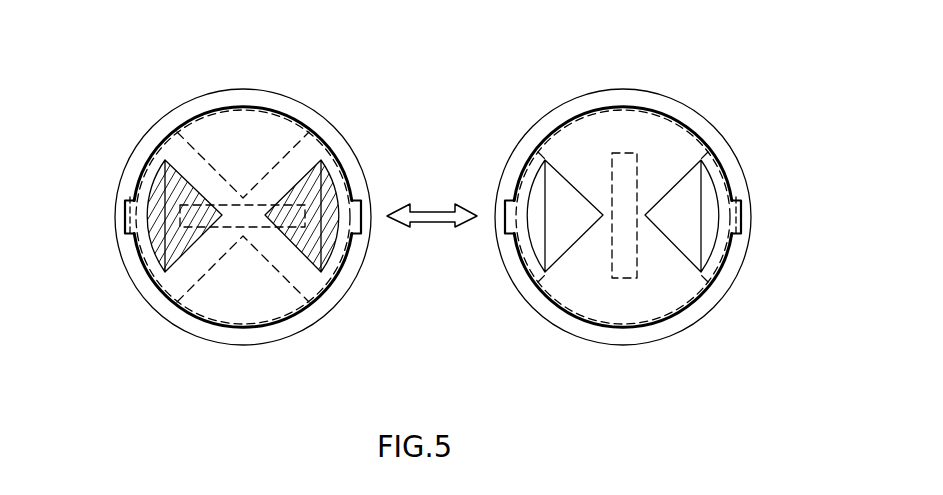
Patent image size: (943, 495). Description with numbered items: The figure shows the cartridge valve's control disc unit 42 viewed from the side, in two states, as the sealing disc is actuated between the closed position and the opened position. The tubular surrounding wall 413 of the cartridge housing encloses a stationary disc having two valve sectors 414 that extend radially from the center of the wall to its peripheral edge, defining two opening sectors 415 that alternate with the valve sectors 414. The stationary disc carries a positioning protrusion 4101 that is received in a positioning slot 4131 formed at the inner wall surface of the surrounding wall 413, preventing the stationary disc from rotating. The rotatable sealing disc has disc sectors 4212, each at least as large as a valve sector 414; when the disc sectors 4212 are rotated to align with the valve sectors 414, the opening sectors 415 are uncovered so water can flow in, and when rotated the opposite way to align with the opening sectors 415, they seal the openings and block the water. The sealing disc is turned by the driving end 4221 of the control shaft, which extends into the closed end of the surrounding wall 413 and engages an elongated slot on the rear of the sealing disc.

The control disc unit 42 is at (295, 143).
The surrounding wall 413 is at (130, 180).
The positioning slot 4131 is at (118, 214).
The positioning protrusion 4101 is at (125, 228).
The valve sector 414 is at (257, 130).
The opening sector 415 is at (163, 191).
The disc sector 4212 is at (175, 226).
The driving end 4221 is at (620, 175).